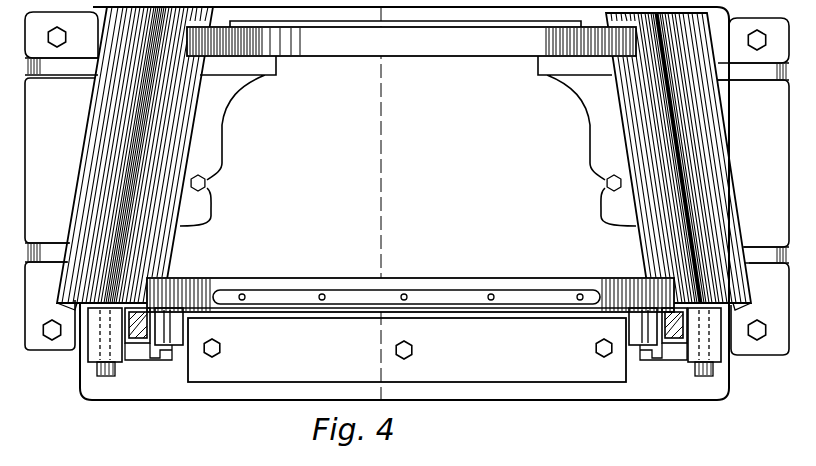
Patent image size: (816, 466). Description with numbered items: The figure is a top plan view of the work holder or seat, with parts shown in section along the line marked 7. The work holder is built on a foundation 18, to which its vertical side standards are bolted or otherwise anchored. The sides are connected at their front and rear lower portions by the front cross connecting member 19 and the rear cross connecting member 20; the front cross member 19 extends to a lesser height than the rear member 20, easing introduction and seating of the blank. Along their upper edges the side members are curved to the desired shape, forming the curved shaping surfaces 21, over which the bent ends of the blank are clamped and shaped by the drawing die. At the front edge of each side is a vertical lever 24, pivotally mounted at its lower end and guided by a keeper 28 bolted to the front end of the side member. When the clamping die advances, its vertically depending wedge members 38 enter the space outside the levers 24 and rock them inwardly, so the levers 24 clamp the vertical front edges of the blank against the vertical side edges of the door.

The section line direction arrows 7 is at (409, 15).
The foundation 18 is at (168, 392).
The front cross connecting member 19 is at (259, 274).
The rear cross connecting member 20 is at (291, 46).
The curved shaping surfaces 21 is at (78, 150).
The vertical lever 24 is at (170, 331).
The keeper 28 is at (91, 350).
The wedge member 38 is at (139, 340).